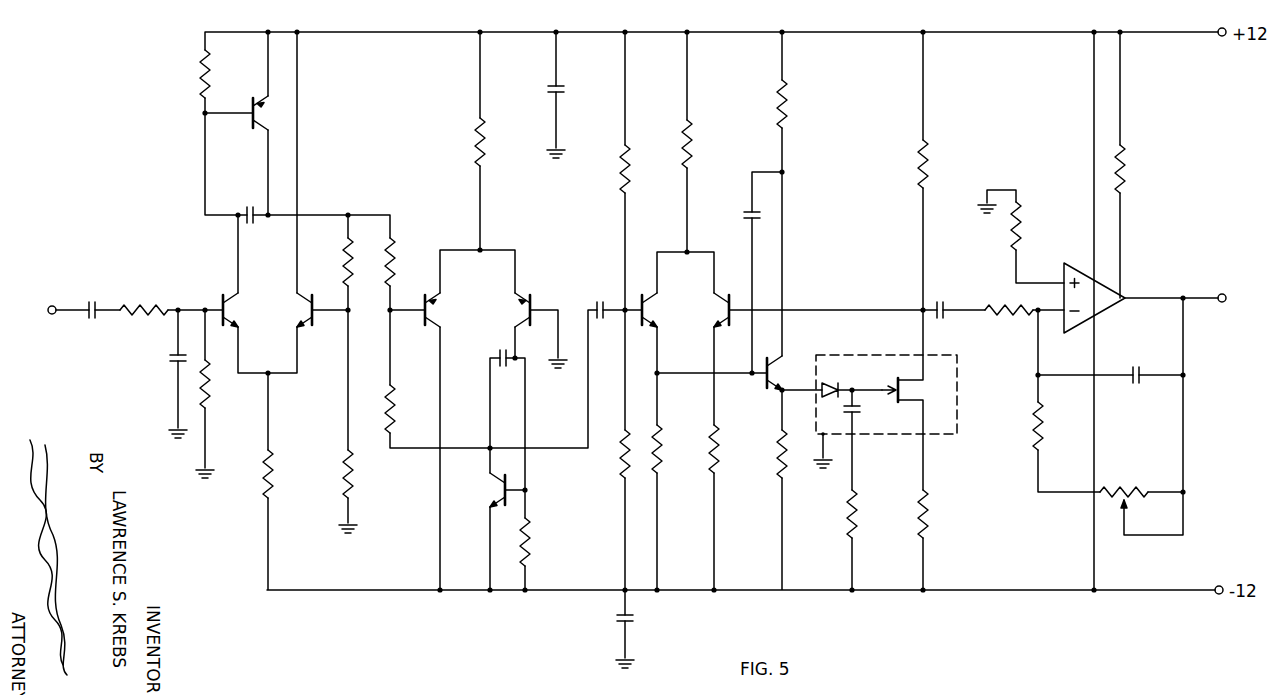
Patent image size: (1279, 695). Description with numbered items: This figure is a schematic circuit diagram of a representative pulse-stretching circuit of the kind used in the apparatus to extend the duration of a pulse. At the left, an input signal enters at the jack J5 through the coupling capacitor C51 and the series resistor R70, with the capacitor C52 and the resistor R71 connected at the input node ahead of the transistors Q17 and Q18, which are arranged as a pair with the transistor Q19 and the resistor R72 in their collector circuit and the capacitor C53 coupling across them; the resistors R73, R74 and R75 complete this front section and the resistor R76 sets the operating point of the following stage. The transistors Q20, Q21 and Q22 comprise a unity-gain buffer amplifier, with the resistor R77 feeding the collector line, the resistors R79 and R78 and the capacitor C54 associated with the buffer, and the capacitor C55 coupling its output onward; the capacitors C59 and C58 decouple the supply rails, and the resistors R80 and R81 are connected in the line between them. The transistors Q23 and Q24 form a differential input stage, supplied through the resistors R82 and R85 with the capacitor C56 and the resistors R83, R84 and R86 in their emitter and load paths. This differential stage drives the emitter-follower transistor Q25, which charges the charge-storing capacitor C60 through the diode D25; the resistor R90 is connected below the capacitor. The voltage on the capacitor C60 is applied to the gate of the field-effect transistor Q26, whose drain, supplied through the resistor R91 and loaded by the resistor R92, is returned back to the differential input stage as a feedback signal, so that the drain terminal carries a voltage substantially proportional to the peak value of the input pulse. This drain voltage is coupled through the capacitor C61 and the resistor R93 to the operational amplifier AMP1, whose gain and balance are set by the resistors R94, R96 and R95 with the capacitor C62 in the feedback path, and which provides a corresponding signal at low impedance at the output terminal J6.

The input jack J5 is at (56, 306).
The capacitor C51 is at (90, 304).
The resistor R70 is at (152, 302).
The capacitor C52 is at (174, 368).
The resistor R71 is at (209, 388).
The transistor Q17 is at (220, 296).
The transistor Q18 is at (314, 322).
The transistor Q19 is at (251, 104).
The resistor R72 is at (200, 77).
The capacitor C53 is at (254, 220).
The resistor R73 is at (272, 463).
The resistor R74 is at (354, 274).
The resistor R75 is at (352, 474).
The resistor R76 is at (394, 262).
The resistor R77 is at (476, 150).
The resistor R79 is at (394, 406).
The transistor Q20 is at (434, 294).
The transistor Q21 is at (516, 303).
The capacitor C54 is at (500, 356).
The transistor Q22 is at (498, 490).
The resistor R78 is at (530, 543).
The capacitor C55 is at (596, 304).
The capacitor C59 is at (562, 87).
The resistor R80 is at (620, 164).
The resistor R81 is at (618, 460).
The capacitor C58 is at (616, 622).
The transistor Q23 is at (648, 294).
The transistor Q24 is at (720, 308).
The resistor R82 is at (692, 146).
The capacitor C56 is at (748, 210).
The resistor R83 is at (661, 472).
The resistor R84 is at (712, 444).
The resistor R85 is at (786, 110).
The resistor R86 is at (780, 459).
The emitter-follower transistor Q25 is at (768, 384).
The diode D25 is at (828, 382).
The field-effect transistor Q26 is at (888, 380).
The charge-storing capacitor C60 is at (856, 418).
The resistor R90 is at (848, 521).
The resistor R92 is at (928, 516).
The resistor R91 is at (926, 178).
The capacitor C61 is at (942, 316).
The resistor R93 is at (994, 314).
The resistor R94 is at (1008, 236).
The operational amplifier AMP1 is at (1072, 261).
The resistor R96 is at (1124, 173).
The output terminal J6 is at (1230, 292).
The capacitor C62 is at (1140, 368).
The potentiometer R95 is at (1124, 492).